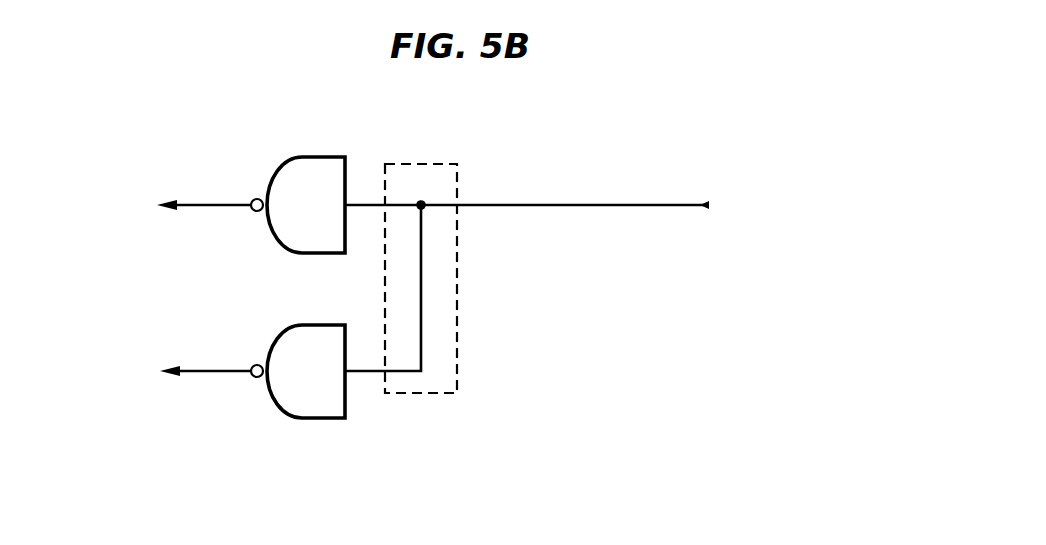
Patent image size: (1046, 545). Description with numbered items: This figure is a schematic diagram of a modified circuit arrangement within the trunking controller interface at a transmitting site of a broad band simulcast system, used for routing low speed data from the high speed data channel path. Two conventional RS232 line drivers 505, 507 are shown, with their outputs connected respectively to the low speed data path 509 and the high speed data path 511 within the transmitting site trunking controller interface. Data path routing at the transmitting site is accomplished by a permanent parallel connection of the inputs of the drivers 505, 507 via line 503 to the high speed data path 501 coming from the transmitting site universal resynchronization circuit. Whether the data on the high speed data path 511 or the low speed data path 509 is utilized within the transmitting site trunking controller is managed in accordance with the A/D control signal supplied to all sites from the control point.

The high speed data path 501 is at (620, 205).
The line 503 is at (421, 300).
The RS232 line driver 505 is at (346, 400).
The RS232 line driver 507 is at (346, 184).
The low speed data path 509 is at (198, 372).
The high speed data path 511 is at (205, 205).